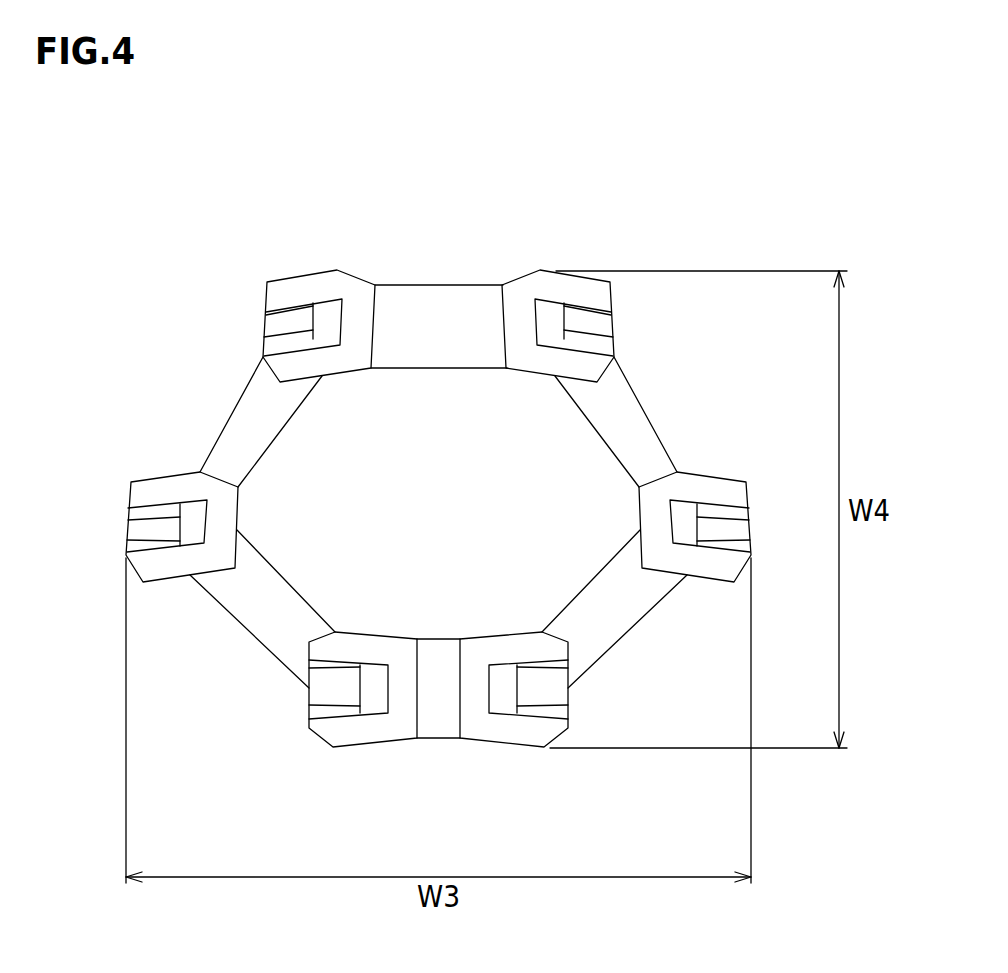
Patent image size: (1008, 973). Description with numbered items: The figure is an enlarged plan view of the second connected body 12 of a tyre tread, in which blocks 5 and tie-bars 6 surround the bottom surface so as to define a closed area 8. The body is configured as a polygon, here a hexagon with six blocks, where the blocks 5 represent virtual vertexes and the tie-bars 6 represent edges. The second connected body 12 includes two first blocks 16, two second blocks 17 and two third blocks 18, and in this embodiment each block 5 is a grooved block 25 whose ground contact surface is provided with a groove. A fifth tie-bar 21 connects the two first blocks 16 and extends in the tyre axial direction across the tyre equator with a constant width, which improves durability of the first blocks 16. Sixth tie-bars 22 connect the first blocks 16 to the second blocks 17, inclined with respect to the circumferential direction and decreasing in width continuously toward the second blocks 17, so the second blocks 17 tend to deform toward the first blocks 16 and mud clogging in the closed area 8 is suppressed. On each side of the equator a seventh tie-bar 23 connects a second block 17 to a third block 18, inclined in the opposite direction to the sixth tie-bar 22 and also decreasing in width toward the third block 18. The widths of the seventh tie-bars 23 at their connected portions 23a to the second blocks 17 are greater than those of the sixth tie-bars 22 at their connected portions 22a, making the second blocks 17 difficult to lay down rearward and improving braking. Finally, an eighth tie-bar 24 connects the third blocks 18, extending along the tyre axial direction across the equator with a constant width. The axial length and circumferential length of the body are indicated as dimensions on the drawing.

The second connected body 12 is at (263, 251).
The block 5 is at (297, 333).
The first block 16 is at (582, 330).
The tie-bar 6 is at (440, 327).
The fifth tie-bar 21 is at (439, 326).
The second block 17 is at (160, 532).
The third block 18 is at (335, 690).
The grooved block 25 is at (363, 689).
The eighth tie-bar 24 is at (437, 698).
The sixth tie-bar 22 is at (250, 421).
The connected portion 22a is at (223, 476).
The seventh tie-bar 23 is at (263, 600).
The connected portion 23a is at (237, 548).
The closed area 8 is at (447, 517).